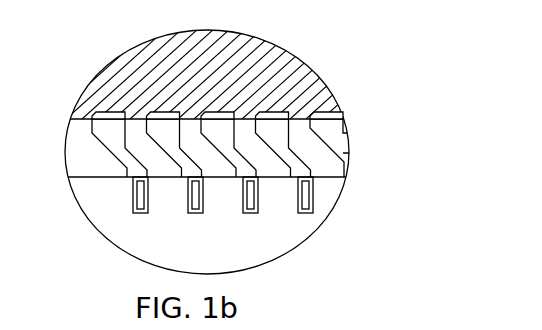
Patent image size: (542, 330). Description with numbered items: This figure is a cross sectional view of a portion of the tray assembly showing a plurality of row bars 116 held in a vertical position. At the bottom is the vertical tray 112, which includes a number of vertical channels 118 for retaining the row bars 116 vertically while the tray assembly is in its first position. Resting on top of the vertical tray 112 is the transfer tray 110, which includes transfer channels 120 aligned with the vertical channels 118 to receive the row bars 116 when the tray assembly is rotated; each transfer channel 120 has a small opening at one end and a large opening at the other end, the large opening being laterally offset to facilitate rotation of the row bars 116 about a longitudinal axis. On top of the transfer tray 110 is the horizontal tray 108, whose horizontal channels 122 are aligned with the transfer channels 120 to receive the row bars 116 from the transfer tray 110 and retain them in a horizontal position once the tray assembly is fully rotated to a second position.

The horizontal tray 108 is at (103, 78).
The transfer tray 110 is at (72, 162).
The vertical tray 112 is at (103, 226).
The row bars 116 is at (313, 206).
The vertical channels 118 is at (305, 213).
The transfer channels 120 is at (106, 132).
The horizontal channels 122 is at (327, 113).